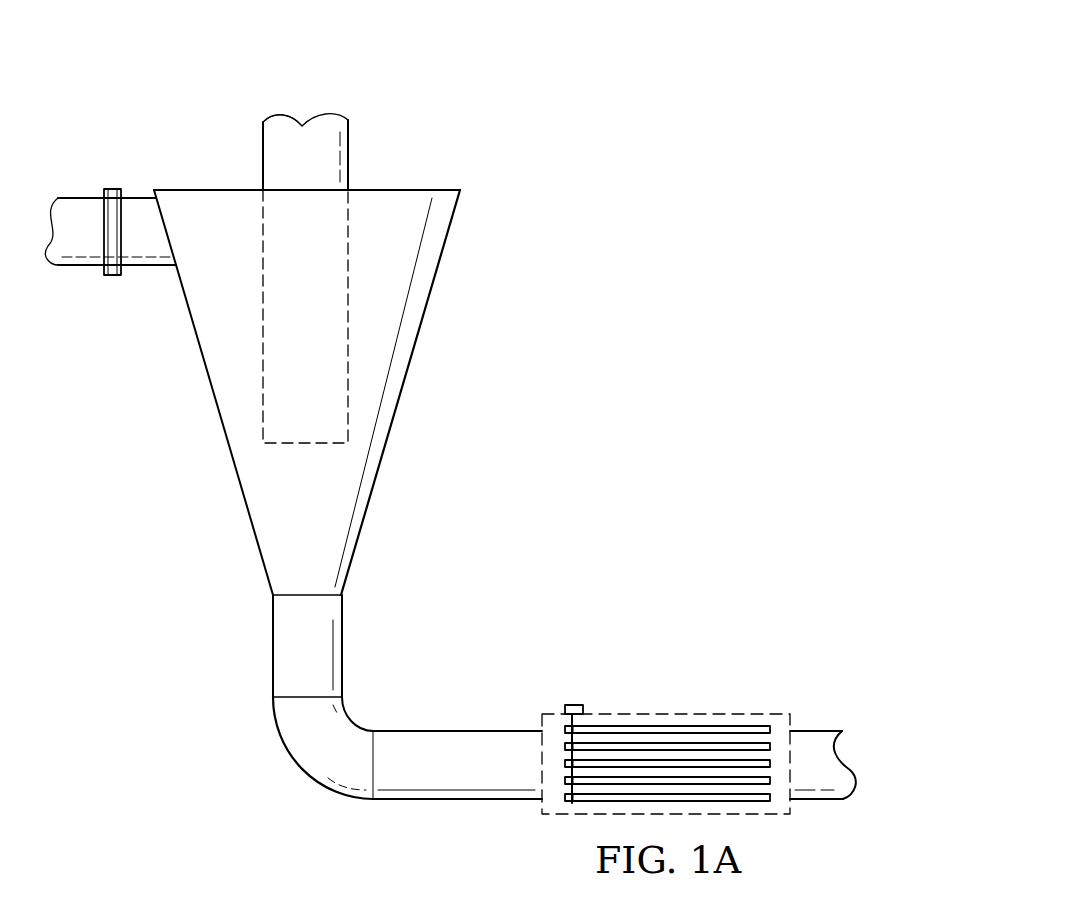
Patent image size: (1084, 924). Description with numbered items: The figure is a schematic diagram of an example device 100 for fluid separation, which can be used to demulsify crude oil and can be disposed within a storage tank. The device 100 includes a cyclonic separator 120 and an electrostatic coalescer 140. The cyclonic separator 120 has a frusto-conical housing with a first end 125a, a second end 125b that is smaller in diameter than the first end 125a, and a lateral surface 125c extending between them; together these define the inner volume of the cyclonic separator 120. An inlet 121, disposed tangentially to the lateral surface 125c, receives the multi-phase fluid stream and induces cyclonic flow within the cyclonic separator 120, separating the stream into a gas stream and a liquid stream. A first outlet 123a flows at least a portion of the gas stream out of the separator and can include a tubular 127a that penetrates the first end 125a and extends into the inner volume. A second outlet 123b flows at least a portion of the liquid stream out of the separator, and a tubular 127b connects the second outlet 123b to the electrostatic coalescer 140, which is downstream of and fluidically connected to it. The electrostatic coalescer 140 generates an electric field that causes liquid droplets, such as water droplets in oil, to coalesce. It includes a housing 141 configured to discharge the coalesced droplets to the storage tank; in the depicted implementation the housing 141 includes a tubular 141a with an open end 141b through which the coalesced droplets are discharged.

The device for fluid separation 100 is at (681, 98).
The cyclonic separator 120 is at (184, 328).
The inlet 121 is at (128, 196).
The first outlet 123a is at (305, 99).
The second outlet 123b is at (283, 626).
The first end 125a is at (403, 190).
The second end 125b is at (322, 597).
The lateral surface 125c is at (229, 458).
The tubular 127a is at (263, 160).
The tubular 127b is at (342, 648).
The electrostatic coalescer 140 is at (738, 708).
The housing 141 is at (680, 714).
The tubular 141a is at (815, 731).
The open end 141b is at (869, 766).